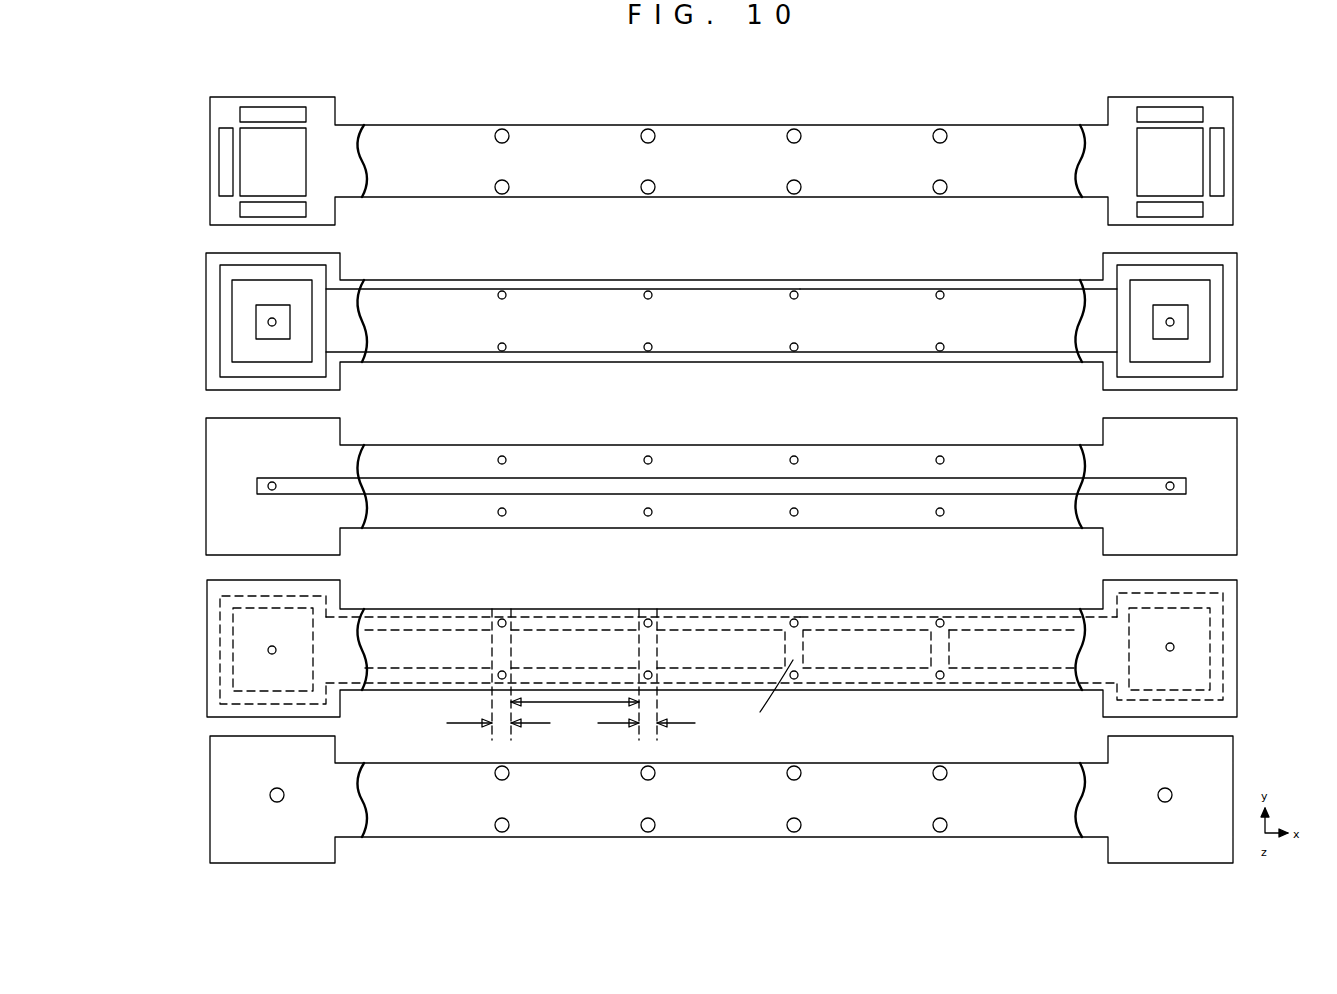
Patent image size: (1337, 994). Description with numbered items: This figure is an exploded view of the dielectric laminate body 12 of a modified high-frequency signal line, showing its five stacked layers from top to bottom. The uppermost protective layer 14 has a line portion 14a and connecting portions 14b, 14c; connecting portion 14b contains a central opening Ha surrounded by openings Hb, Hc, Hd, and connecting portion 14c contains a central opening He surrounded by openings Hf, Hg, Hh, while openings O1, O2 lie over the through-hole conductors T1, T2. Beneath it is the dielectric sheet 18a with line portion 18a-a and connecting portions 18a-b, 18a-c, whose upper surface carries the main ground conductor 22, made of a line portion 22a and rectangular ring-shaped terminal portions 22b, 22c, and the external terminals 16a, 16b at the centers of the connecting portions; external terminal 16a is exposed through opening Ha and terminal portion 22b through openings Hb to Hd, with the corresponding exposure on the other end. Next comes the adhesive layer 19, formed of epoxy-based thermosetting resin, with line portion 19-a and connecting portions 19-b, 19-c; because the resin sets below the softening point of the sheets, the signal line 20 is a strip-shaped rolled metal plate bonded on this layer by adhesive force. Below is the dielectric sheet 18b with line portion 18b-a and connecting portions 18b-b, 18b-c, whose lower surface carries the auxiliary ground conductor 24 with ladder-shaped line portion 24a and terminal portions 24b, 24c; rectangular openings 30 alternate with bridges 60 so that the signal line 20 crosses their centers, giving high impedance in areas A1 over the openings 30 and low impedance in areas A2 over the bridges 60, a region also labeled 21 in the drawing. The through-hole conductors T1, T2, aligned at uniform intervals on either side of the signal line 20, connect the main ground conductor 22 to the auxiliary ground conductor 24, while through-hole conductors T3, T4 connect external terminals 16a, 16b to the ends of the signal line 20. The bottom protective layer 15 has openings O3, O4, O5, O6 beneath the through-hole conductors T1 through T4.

The dielectric laminate body 12 is at (235, 35).
The protective layer 14 is at (650, 125).
The line portion 14a is at (735, 125).
The connecting portion 14b is at (270, 97).
The connecting portion 14c is at (1168, 97).
The opening Ha is at (302, 165).
The opening Hb is at (262, 112).
The opening Hc is at (225, 165).
The opening Hd is at (272, 210).
The opening He is at (1142, 165).
The opening Hf is at (1195, 112).
The opening Hg is at (1222, 165).
The opening Hh is at (1162, 210).
The opening O1 is at (940, 129).
The opening O2 is at (940, 194).
The opening O3 is at (940, 766).
The opening O4 is at (940, 832).
The opening O5 is at (277, 788).
The opening O6 is at (1165, 788).
The dielectric sheet 18a is at (530, 280).
The line portion 18a-a is at (650, 280).
The connecting portion 18a-b is at (206, 357).
The connecting portion 18a-c is at (1240, 355).
The main ground conductor 22 is at (735, 289).
The line portion 22a is at (905, 289).
The terminal portion 22b is at (222, 291).
The terminal portion 22c is at (1215, 289).
The external terminal 16a is at (258, 327).
The external terminal 16b is at (1185, 330).
The through-hole conductor T1 is at (794, 291).
The through-hole conductor T2 is at (794, 351).
The through-hole conductor T3 is at (272, 318).
The through-hole conductor T4 is at (1170, 318).
The adhesive layer 19 is at (532, 445).
The line portion 19-a is at (650, 445).
The connecting portion 19-b is at (206, 508).
The connecting portion 19-c is at (1240, 503).
The signal line 20 is at (875, 480).
The dielectric sheet 18b is at (530, 609).
The line portion 18b-a is at (650, 609).
The connecting portion 18b-b is at (207, 688).
The connecting portion 18b-c is at (1240, 688).
The auxiliary ground conductor 24 is at (737, 617).
The line portion 24a is at (990, 617).
The terminal portion 24b is at (225, 620).
The terminal portion 24c is at (1225, 618).
The opening 30 is at (838, 632).
The slit region 21 is at (870, 645).
The bridge 60 is at (768, 690).
The protective layer 15 is at (716, 763).
The area A1 is at (575, 715).
The area A2 is at (571, 716).